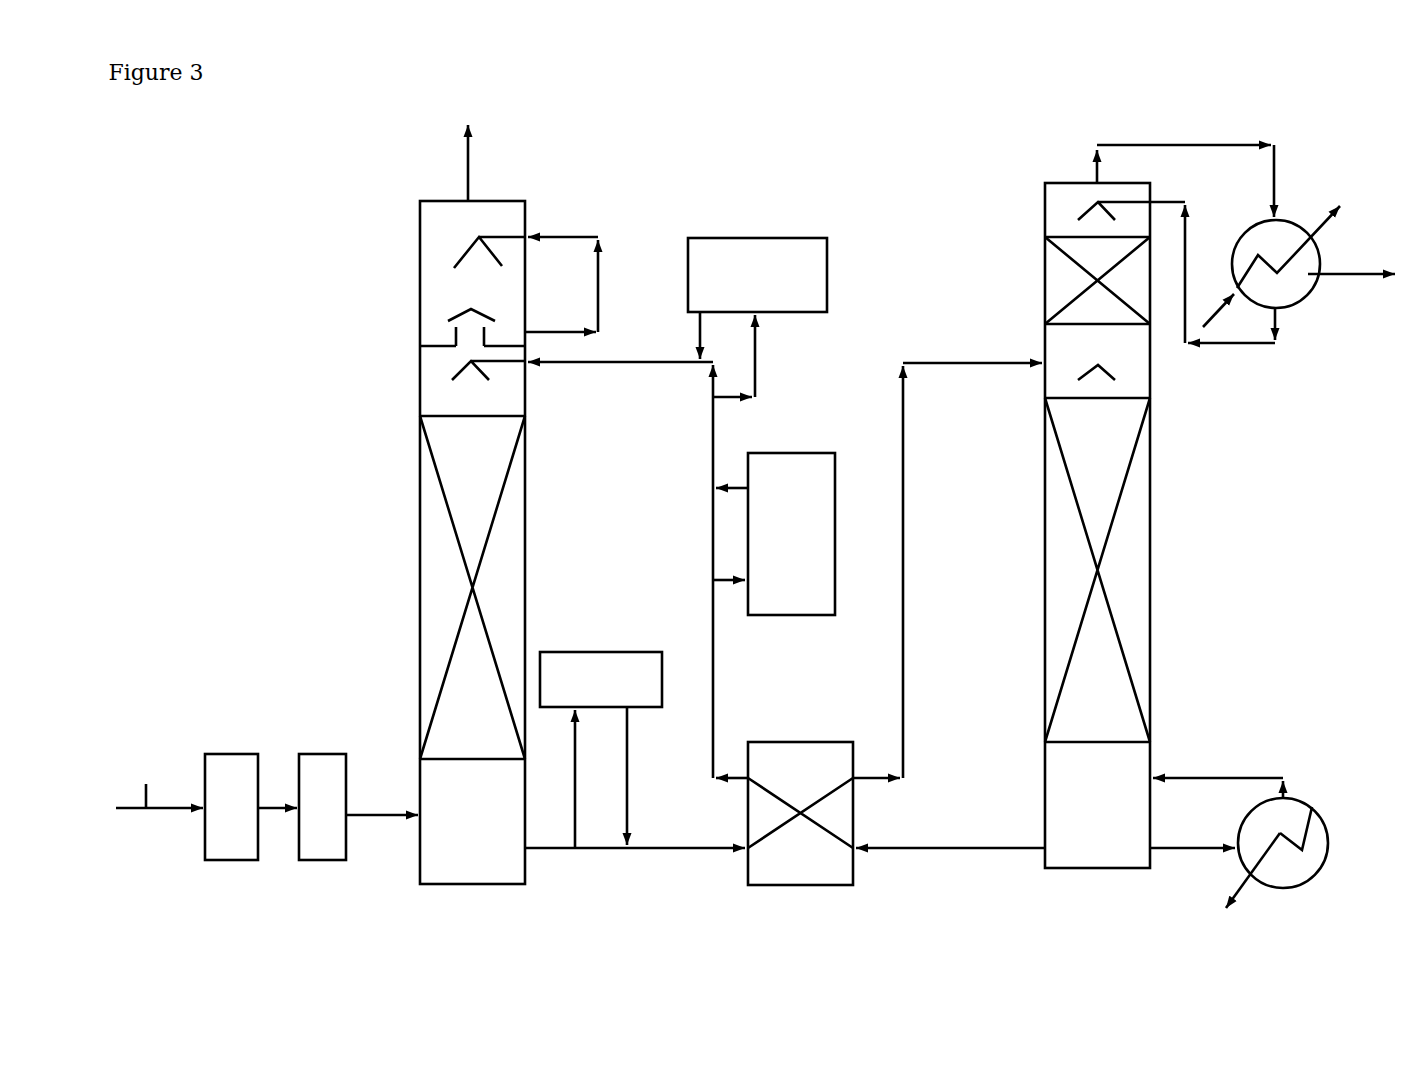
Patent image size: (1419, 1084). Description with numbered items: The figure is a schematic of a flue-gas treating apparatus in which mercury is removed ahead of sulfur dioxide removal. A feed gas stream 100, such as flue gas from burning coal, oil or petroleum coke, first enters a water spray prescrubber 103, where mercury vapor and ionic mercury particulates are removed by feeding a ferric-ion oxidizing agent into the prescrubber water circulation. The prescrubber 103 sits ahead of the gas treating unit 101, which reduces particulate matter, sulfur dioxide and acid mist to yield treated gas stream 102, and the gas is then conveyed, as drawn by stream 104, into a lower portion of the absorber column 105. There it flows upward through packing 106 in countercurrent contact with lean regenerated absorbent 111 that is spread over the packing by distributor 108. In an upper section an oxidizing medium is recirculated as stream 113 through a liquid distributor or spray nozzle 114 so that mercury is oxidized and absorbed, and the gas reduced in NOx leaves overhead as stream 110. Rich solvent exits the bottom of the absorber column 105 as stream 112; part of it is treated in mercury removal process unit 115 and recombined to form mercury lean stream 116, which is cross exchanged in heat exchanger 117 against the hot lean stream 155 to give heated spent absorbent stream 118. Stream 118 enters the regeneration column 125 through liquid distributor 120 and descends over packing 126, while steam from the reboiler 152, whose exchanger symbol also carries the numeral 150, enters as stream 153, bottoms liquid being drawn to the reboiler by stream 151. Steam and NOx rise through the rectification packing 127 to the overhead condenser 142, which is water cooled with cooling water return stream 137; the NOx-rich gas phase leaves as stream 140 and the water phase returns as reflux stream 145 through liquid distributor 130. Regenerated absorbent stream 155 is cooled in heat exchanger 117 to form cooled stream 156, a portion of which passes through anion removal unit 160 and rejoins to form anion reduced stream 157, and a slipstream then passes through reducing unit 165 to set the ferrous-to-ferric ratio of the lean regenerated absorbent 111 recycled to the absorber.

The feed gas stream 100 is at (159, 786).
The gas treating unit 101 is at (323, 859).
The treated gas stream 102 is at (282, 800).
The water spray prescrubber 103 is at (230, 861).
The pretreated feed stream 104 is at (389, 816).
The absorber column 105 is at (420, 624).
The packing 106 is at (434, 507).
The distributor 108 is at (434, 380).
The treated gas stream 110 is at (468, 168).
The lean regenerated absorbent 111 is at (564, 364).
The rich solvent stream 112 is at (550, 850).
The oxidizing medium stream 113 is at (557, 229).
The liquid distributor or spray nozzle 114 is at (452, 248).
The mercury removal process unit 115 is at (601, 750).
The mercury lean stream 116 is at (670, 850).
The heat exchanger 117 is at (825, 883).
The heated spent absorbent stream 118 is at (903, 493).
The liquid distributor 120 is at (1063, 345).
The regeneration column 125 is at (1153, 662).
The packing 126 is at (1115, 562).
The packing 127 is at (1063, 272).
The liquid distributor 130 is at (1063, 202).
The cooling water return stream 137 is at (1302, 233).
The gas phase stream 140 is at (1351, 261).
The overhead condenser 142 is at (1300, 302).
The water phase stream 145 is at (1232, 343).
The reboiler 150 is at (1318, 805).
The liquid withdrawal stream 151 is at (1205, 853).
The reboiler 152 is at (1315, 875).
The steam stream 153 is at (1213, 778).
The regenerated absorbent stream 155 is at (967, 850).
The cooled regenerated absorbent stream 156 is at (744, 571).
The anion reduced stream 157 is at (715, 440).
The anion removal unit 160 is at (774, 534).
The reducing unit 165 is at (757, 275).